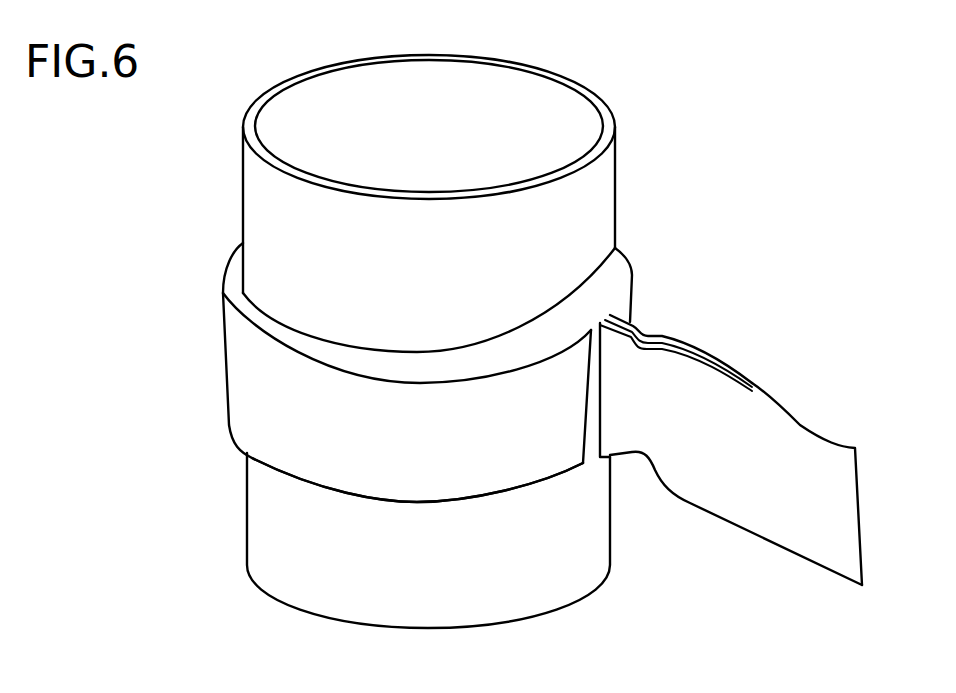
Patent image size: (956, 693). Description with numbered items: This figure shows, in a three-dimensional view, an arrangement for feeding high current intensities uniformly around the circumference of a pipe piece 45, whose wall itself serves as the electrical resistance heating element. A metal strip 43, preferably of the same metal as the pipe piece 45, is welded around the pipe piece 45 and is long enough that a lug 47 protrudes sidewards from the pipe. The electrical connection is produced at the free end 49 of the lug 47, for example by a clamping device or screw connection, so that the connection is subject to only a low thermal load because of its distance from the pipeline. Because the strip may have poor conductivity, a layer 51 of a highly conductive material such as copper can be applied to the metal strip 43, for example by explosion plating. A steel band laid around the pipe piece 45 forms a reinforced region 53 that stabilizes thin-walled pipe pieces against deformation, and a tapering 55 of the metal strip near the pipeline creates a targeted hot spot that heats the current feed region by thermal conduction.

The pipe piece 45 is at (595, 195).
The layer 51 is at (382, 437).
The reinforced region 53 is at (233, 282).
The tapering 55 is at (637, 455).
The metal strip 43 is at (667, 362).
The lug 47 is at (820, 500).
The free end 49 is at (728, 545).